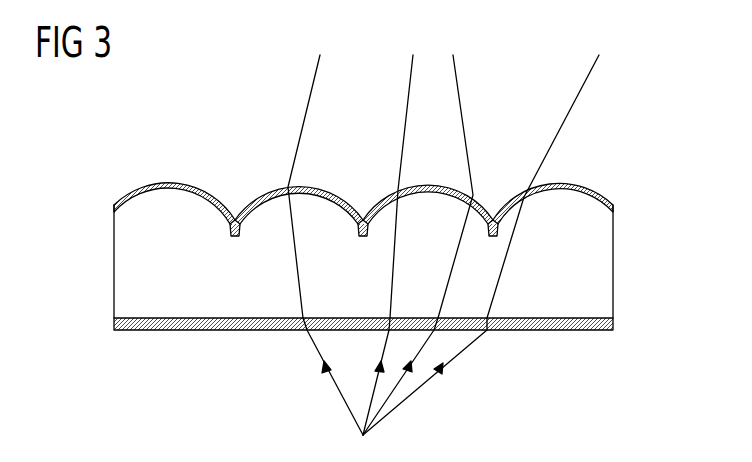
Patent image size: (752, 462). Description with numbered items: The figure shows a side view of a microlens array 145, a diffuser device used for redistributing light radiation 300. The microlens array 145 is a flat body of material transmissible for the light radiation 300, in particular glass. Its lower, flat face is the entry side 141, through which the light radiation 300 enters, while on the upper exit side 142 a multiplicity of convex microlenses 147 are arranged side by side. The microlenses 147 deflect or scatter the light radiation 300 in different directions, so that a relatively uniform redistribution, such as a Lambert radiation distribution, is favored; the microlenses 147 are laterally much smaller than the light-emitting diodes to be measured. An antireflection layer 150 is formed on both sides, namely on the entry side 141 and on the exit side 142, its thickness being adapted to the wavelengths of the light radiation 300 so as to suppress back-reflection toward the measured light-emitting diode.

The microlens array 145 is at (175, 147).
The exit side 142 is at (587, 192).
The convex microlenses 147 is at (263, 217).
The entry side 141 is at (533, 329).
The antireflection layer 150 is at (507, 193).
The light radiation 300 is at (405, 402).